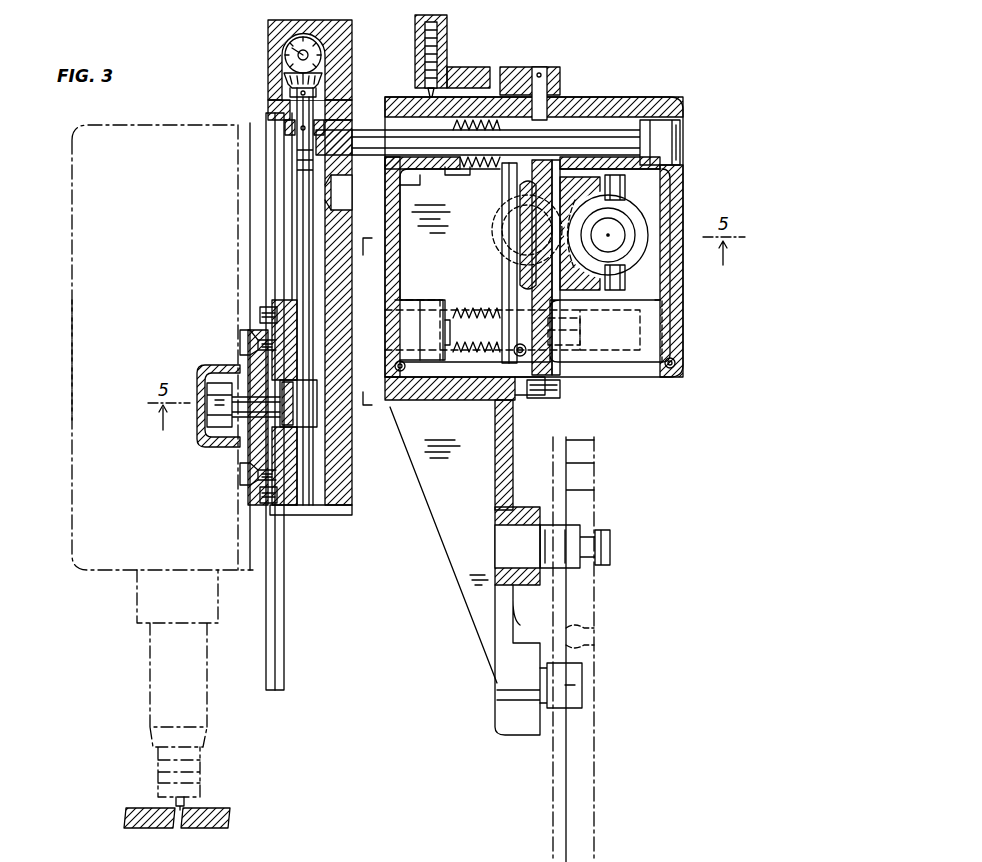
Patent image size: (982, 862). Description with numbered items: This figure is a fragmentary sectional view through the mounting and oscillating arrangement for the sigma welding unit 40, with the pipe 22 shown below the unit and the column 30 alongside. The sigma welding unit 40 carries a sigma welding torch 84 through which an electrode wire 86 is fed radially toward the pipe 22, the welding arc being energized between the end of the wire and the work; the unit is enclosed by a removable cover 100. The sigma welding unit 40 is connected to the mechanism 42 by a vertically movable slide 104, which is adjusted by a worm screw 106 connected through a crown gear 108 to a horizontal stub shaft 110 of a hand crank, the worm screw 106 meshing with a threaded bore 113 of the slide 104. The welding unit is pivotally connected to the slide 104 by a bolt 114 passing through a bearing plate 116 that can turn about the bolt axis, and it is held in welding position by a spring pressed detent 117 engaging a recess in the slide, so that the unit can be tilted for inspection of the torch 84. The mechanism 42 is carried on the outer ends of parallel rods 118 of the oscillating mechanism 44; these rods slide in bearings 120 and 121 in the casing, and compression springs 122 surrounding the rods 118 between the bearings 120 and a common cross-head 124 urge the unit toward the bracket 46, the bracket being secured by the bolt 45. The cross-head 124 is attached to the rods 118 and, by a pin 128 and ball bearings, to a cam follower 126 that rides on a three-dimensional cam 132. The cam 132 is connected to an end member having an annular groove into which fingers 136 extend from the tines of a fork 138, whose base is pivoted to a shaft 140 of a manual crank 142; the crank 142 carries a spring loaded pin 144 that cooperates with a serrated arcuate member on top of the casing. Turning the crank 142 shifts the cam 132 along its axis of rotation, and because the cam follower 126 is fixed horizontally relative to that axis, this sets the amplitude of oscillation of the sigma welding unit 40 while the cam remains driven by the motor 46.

The pipe 22 is at (230, 815).
The column 30 is at (597, 838).
The sigma welding unit 40 is at (73, 403).
The mechanism 42 is at (333, 21).
The oscillating mechanism 44 is at (636, 92).
The bolt 45 is at (612, 549).
The motor 46 is at (460, 582).
The sigma welding torch 84 is at (150, 680).
The electrode wire 86 is at (185, 802).
The removable cover 100 is at (73, 274).
The slide 104 is at (312, 486).
The worm screw 106 is at (299, 222).
The crown gear 108 is at (286, 75).
The horizontal stub shaft 110 is at (286, 57).
The threaded bore 113 is at (320, 383).
The bolt 114 is at (207, 420).
The bearing plate 116 is at (250, 461).
The spring pressed detent 117 is at (252, 484).
The parallel rods 118 is at (372, 130).
The bearings 120 is at (420, 170).
The bearings 121 is at (640, 108).
The compression springs 122 is at (473, 165).
The cross-head 124 is at (502, 200).
The cam follower 126 is at (512, 262).
The pin 128 is at (518, 231).
The three-dimensional cam 132 is at (645, 236).
The fingers 136 is at (620, 192).
The fork 138 is at (584, 164).
The shaft 140 is at (546, 326).
The manual crank 142 is at (446, 50).
The spring loaded pin 144 is at (434, 90).